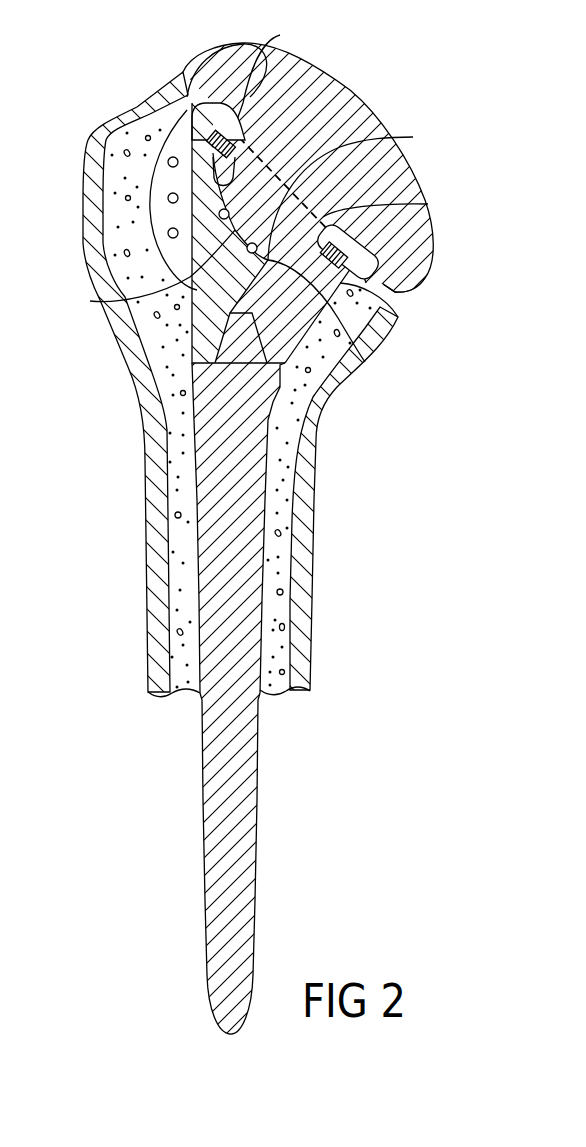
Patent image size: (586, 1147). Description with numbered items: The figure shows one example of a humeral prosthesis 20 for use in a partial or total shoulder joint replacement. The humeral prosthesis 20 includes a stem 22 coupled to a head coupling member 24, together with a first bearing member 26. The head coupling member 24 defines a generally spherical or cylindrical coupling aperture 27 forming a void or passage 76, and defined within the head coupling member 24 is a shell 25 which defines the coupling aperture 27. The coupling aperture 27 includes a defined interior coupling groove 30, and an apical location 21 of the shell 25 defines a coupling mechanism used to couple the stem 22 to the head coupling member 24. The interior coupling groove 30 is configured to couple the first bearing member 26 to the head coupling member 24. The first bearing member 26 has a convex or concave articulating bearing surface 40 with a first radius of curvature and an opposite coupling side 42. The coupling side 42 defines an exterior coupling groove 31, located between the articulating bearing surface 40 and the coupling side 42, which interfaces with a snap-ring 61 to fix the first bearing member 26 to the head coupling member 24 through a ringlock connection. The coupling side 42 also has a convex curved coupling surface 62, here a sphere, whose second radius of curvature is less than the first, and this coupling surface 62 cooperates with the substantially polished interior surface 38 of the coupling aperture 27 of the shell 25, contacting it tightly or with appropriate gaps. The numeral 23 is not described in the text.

The humeral prosthesis 20 is at (178, 540).
The apical location 21 is at (200, 350).
The stem 22 is at (244, 837).
The head bore 23 is at (408, 138).
The head coupling member 24 is at (357, 361).
The shell 25 is at (384, 292).
The first bearing member 26 is at (421, 272).
The coupling aperture 27 is at (158, 90).
The interior coupling groove 30 is at (195, 105).
The exterior coupling groove 31 is at (428, 204).
The interior surface 38 is at (232, 337).
The articulating bearing surface 40 is at (378, 110).
The coupling side 42 is at (221, 220).
The snap-ring 61 is at (280, 35).
The convex curved coupling surface 62 is at (90, 301).
The passage 76 is at (370, 338).